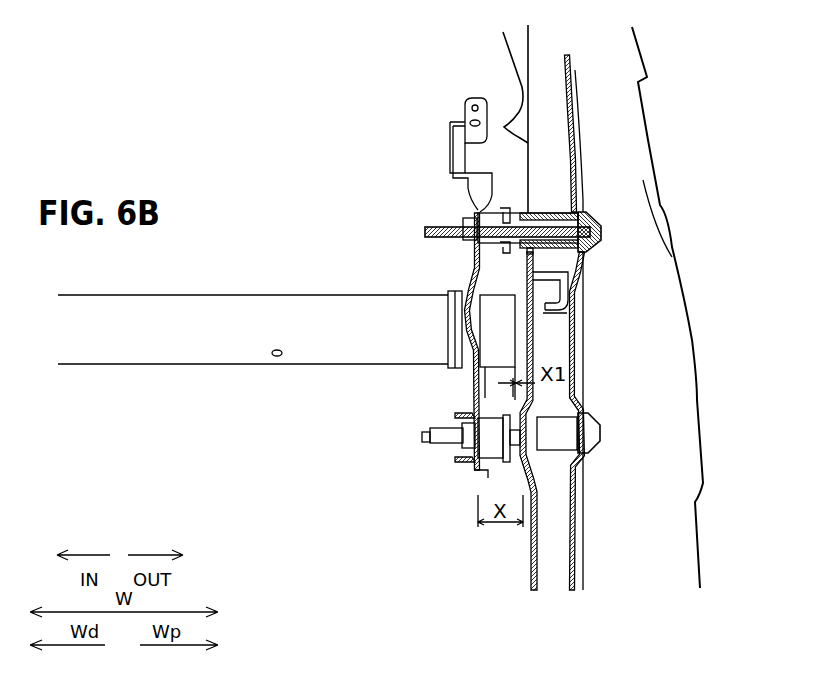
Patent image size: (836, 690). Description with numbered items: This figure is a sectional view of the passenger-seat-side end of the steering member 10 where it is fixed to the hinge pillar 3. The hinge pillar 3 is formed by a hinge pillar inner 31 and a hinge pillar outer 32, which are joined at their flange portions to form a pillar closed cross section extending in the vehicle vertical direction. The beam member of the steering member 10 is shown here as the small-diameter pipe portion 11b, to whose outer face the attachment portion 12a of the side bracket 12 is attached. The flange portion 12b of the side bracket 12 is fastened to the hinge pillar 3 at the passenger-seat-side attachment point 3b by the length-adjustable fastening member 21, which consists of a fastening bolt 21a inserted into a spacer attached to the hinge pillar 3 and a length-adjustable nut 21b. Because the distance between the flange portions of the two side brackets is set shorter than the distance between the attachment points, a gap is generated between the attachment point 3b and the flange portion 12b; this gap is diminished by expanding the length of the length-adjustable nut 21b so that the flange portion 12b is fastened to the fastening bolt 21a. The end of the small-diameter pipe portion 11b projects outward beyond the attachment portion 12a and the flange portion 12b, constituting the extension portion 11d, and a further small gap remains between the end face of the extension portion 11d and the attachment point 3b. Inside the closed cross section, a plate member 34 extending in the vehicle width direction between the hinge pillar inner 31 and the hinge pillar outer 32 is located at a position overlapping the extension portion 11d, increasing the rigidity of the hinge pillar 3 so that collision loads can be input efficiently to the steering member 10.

The hinge pillar 3 is at (622, 165).
The passenger-seat-side attachment point 3b is at (590, 358).
The steering member 10 is at (299, 222).
The small-diameter pipe portion 11b is at (229, 295).
The extension portion 11d is at (490, 307).
The side bracket 12 is at (436, 401).
The attachment portion 12a is at (445, 352).
The flange portion 12b is at (472, 392).
The length-adjustable fastening member 21 is at (469, 390).
The fastening bolt 21a is at (477, 238).
The length-adjustable nut 21b is at (480, 207).
The hinge pillar inner 31 is at (540, 62).
The hinge pillar outer 32 is at (627, 100).
The plate member 34 is at (545, 305).